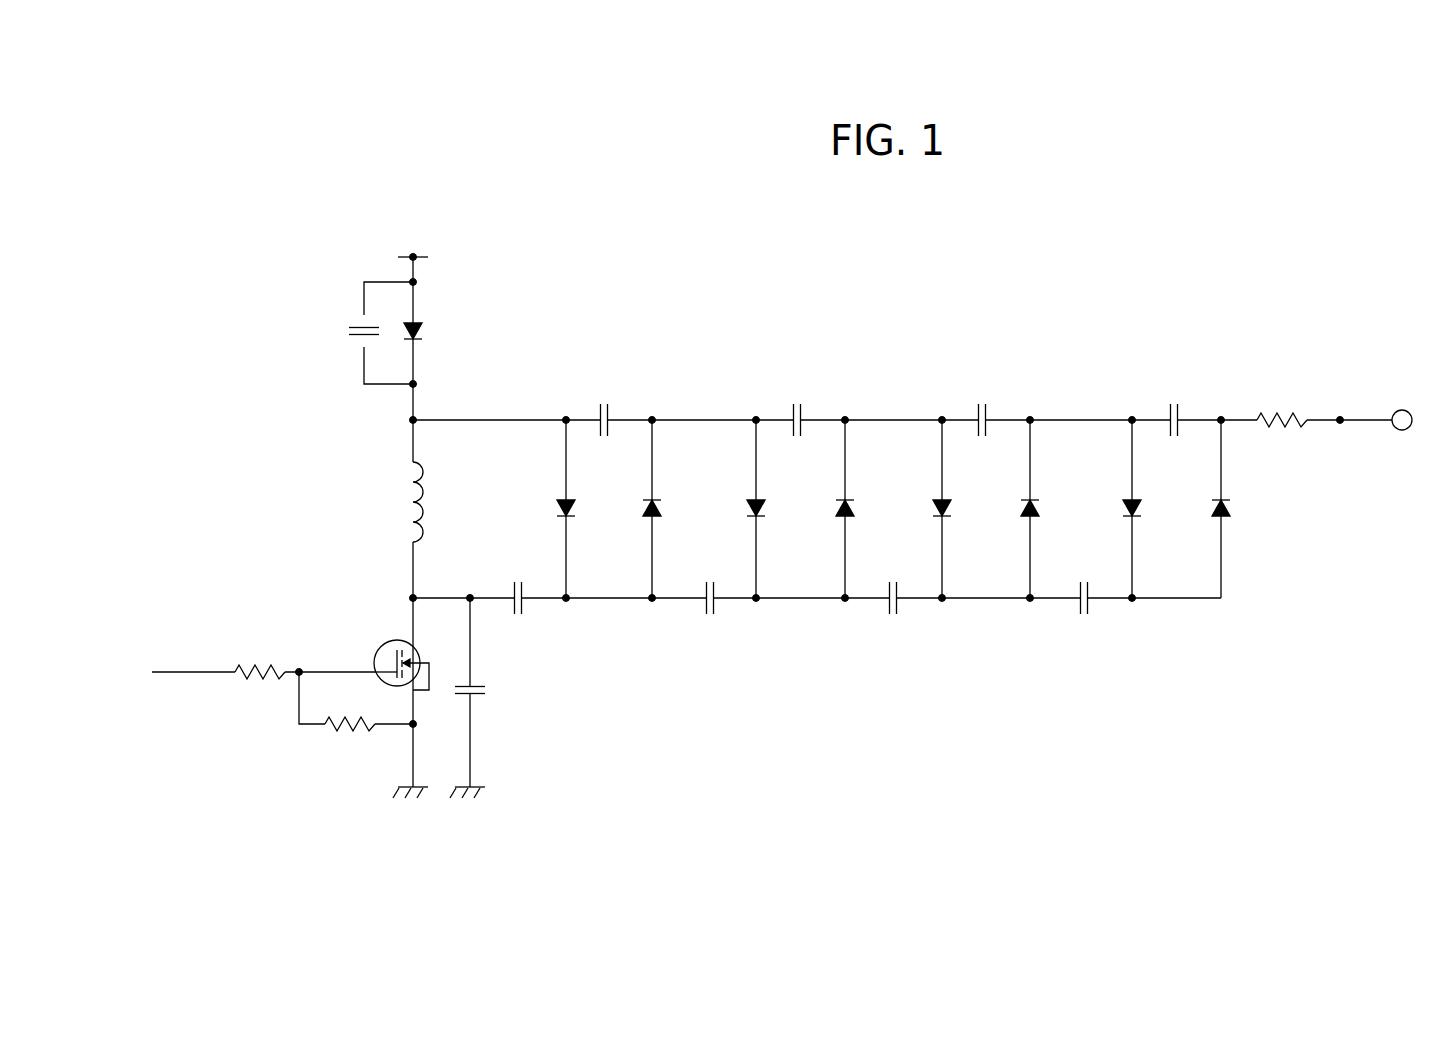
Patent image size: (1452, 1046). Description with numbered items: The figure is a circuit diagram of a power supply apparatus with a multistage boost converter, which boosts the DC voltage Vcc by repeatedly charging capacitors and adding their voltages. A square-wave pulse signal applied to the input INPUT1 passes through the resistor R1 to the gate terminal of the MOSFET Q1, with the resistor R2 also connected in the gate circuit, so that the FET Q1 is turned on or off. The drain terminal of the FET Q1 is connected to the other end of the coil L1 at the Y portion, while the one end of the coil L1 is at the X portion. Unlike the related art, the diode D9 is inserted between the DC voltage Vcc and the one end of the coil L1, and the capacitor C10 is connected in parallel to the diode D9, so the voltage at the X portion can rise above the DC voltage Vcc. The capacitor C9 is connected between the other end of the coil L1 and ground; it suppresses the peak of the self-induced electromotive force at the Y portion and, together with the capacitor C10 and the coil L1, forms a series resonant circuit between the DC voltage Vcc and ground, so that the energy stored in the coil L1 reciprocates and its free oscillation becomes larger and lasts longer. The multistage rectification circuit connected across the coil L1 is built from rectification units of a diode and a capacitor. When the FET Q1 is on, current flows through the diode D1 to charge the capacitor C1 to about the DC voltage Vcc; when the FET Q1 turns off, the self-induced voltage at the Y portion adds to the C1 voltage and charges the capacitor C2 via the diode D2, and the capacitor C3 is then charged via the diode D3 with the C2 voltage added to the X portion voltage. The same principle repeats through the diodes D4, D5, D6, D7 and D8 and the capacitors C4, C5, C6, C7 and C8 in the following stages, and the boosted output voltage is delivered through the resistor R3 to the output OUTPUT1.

The DC voltage Vcc is at (400, 317).
The capacitor C10 is at (358, 333).
The diode D9 is at (438, 332).
The X portion X is at (383, 421).
The Y portion Y is at (393, 590).
The coil L1 is at (395, 509).
The diode D1 is at (545, 509).
The diode D2 is at (635, 509).
The diode D3 is at (736, 509).
The diode D4 is at (826, 509).
The diode D5 is at (924, 509).
The diode D6 is at (1012, 509).
The diode D7 is at (1115, 509).
The diode D8 is at (1205, 507).
The capacitor C1 is at (518, 612).
The capacitor C2 is at (610, 405).
The capacitor C3 is at (711, 612).
The capacitor C4 is at (800, 405).
The capacitor C5 is at (894, 612).
The capacitor C6 is at (982, 405).
The capacitor C7 is at (1091, 612).
The capacitor C8 is at (1172, 405).
The capacitor C9 is at (489, 698).
The resistor R1 is at (305, 655).
The resistor R2 is at (357, 718).
The resistor R3 is at (1282, 406).
The MOSFET Q1 is at (391, 692).
The input INPUT1 is at (185, 656).
The output OUTPUT1 is at (1371, 405).